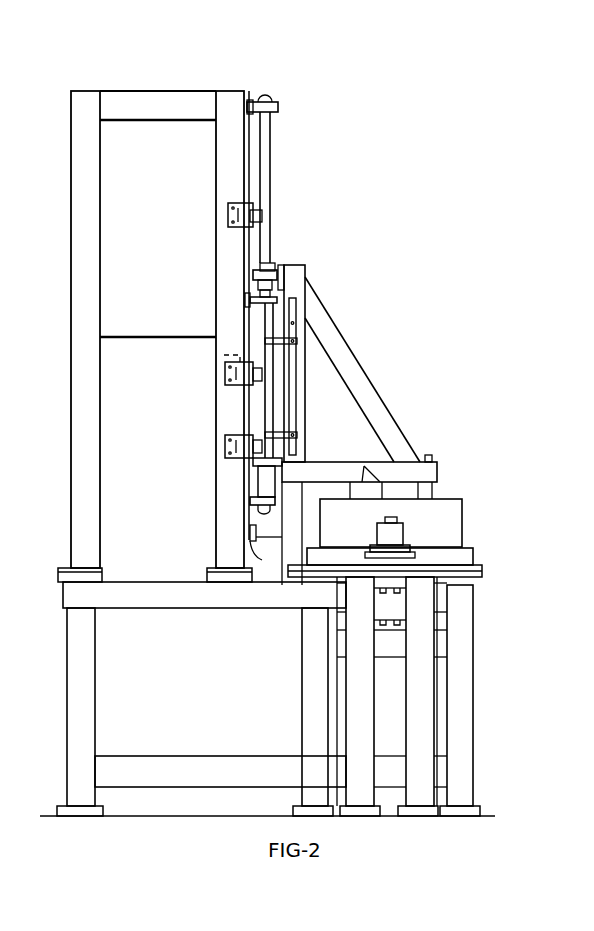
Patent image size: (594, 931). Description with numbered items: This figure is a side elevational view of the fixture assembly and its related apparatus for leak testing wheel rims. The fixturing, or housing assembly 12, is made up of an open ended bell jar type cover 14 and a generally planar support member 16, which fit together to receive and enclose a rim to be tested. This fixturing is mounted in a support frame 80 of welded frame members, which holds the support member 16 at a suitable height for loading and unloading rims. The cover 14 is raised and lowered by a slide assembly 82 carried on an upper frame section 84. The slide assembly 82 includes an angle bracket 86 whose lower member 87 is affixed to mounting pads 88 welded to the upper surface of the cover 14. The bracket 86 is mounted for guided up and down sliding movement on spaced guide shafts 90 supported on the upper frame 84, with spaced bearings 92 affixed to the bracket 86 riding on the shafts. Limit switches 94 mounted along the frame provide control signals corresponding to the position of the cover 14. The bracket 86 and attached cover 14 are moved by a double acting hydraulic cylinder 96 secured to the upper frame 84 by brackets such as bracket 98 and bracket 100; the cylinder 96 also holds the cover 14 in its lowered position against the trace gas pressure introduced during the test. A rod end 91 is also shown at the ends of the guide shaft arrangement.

The housing assembly 12 is at (498, 494).
The cover 14 is at (465, 524).
The support member 16 is at (477, 561).
The support frame 80 is at (520, 652).
The slide assembly 82 is at (336, 256).
The upper frame section 84 is at (70, 158).
The angle bracket 86 is at (368, 312).
The lower member 87 is at (333, 447).
The mounting pads 88 is at (364, 466).
The guide shafts 90 is at (270, 160).
The rod end caps 91 is at (264, 99).
The bearing 92 is at (268, 258).
The limit switches 94 is at (236, 210).
The double acting hydraulic cylinder 96 is at (270, 396).
The bracket 98 is at (270, 560).
The bracket 100 is at (224, 355).